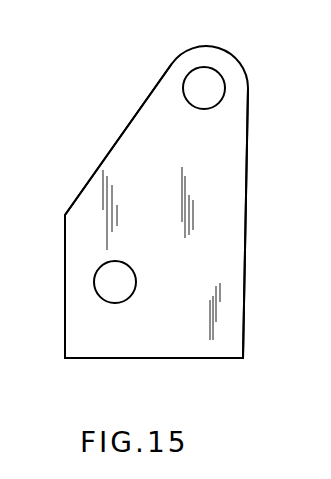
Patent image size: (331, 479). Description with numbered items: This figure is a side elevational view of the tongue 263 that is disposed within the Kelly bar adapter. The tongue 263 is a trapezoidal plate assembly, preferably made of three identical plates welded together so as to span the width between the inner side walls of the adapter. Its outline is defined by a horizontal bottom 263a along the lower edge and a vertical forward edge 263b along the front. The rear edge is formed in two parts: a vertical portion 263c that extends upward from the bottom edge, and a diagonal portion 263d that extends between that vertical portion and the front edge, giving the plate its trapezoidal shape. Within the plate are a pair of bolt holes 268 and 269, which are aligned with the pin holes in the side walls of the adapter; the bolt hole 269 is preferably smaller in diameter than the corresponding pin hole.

The tongue 263 is at (247, 163).
The horizontal bottom 263a is at (208, 358).
The vertical forward edge 263b is at (243, 310).
The vertical portion 263c is at (65, 262).
The diagonal portion 263d is at (110, 152).
The bolt hole 268 is at (183, 100).
The bolt hole 269 is at (133, 291).